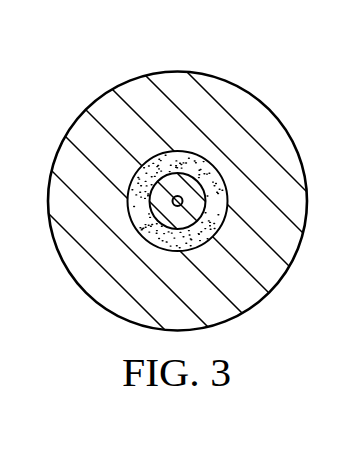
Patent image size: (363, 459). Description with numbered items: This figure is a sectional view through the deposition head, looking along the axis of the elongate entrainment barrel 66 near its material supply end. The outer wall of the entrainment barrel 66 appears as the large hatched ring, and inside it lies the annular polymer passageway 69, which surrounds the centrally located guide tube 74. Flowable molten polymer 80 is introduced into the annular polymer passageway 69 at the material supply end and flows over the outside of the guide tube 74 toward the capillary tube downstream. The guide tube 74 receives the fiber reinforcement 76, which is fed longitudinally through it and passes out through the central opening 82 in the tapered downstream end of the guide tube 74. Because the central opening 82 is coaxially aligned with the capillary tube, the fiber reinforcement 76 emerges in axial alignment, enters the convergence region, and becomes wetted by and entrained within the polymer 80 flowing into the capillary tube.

The entrainment barrel 66 is at (175, 81).
The annular polymer passageway 69 is at (134, 221).
The guide tube 74 is at (184, 182).
The fiber reinforcement 76 is at (178, 201).
The polymer 80 is at (220, 221).
The central opening 82 is at (178, 201).